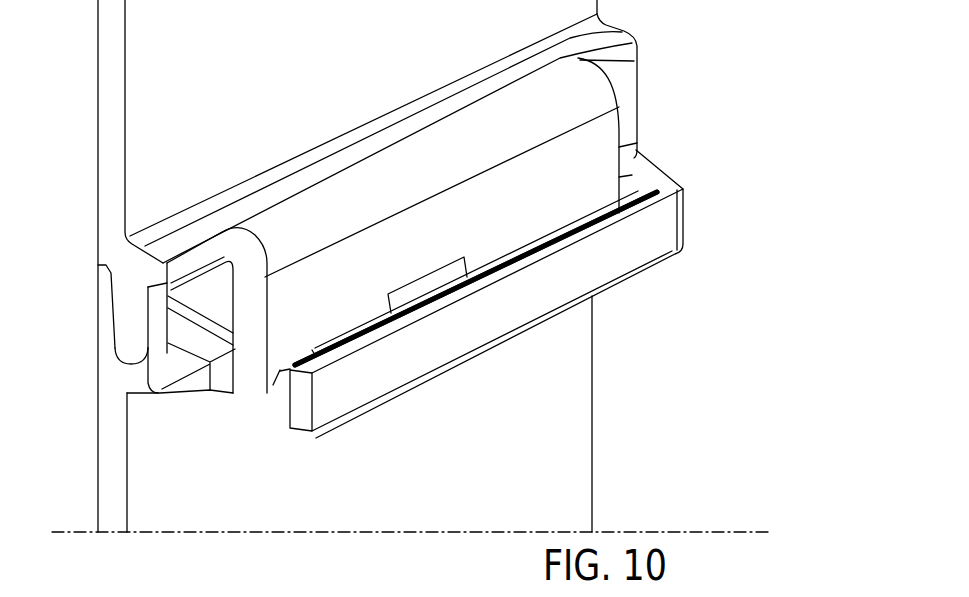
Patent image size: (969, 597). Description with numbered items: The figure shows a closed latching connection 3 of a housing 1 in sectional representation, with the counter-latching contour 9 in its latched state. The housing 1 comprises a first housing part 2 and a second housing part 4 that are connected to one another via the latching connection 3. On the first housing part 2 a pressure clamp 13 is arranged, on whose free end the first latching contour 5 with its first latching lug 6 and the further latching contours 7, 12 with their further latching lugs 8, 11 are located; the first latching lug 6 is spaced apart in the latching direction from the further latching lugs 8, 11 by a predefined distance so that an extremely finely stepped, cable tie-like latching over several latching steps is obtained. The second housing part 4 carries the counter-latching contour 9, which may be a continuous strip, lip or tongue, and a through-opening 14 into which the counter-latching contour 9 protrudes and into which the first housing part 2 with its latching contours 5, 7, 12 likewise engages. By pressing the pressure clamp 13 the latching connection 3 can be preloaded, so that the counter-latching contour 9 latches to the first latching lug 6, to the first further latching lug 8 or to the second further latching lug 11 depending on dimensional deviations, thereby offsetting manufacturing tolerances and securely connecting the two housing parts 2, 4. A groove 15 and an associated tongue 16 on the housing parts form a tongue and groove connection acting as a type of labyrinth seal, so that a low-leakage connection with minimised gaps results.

The housing 1 is at (406, 266).
The first housing part 2 is at (367, 266).
The latching connection 3 is at (507, 283).
The second housing part 4 is at (522, 477).
The first latching contour 5 is at (143, 368).
The first latching lug 6 is at (142, 400).
The further latching contour 7 is at (353, 333).
The first further latching lug 8 is at (482, 249).
The counter-latching contour 9 is at (288, 390).
The second further latching lug 11 is at (427, 278).
The further latching contour 12 is at (522, 278).
The pressure clamp 13 is at (492, 154).
The through-opening 14 is at (630, 216).
The groove 15 is at (90, 398).
The tongue 16 is at (132, 322).